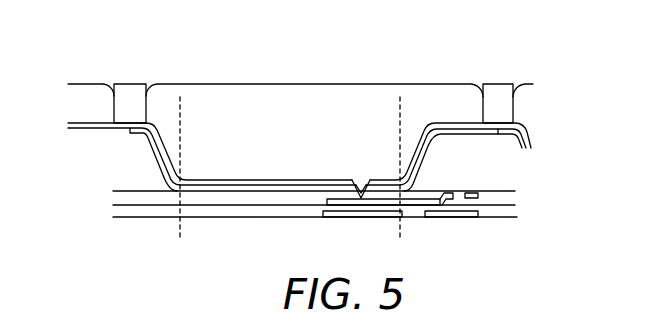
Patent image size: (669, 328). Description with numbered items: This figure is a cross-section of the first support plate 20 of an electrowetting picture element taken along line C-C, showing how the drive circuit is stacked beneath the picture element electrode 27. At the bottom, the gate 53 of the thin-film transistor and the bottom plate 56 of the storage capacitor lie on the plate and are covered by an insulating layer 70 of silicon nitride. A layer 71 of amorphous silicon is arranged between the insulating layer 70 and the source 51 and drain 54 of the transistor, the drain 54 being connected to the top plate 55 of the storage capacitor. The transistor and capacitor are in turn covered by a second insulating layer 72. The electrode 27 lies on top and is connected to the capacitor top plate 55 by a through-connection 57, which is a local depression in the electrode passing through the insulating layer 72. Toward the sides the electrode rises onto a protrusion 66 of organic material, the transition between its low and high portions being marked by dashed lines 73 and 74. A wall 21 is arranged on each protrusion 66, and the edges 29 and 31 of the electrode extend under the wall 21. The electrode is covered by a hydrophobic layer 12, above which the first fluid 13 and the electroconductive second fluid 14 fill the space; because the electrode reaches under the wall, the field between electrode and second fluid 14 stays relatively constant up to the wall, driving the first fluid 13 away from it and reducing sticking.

The hydrophobic layer 12 is at (532, 137).
The first fluid 13 is at (278, 109).
The second fluid 14 is at (278, 77).
The first support plate 20 is at (523, 258).
The wall 21 is at (131, 84).
The electrode 27 is at (432, 122).
The edge of the electrode 29 is at (512, 131).
The edge of the electrode 31 is at (130, 131).
The source 51 is at (470, 193).
The gate 53 is at (466, 218).
The drain 54 is at (447, 193).
The top plate of storage capacitor 55 is at (337, 206).
The bottom plate of storage capacitor 56 is at (372, 218).
The through-connection 57 is at (362, 186).
The protrusion 66 is at (132, 168).
The insulating layer 70 is at (513, 210).
The layer of amorphous silicon 71 is at (437, 206).
The insulating layer 72 is at (516, 191).
The dashed line 73 is at (183, 109).
The dashed line 74 is at (398, 109).